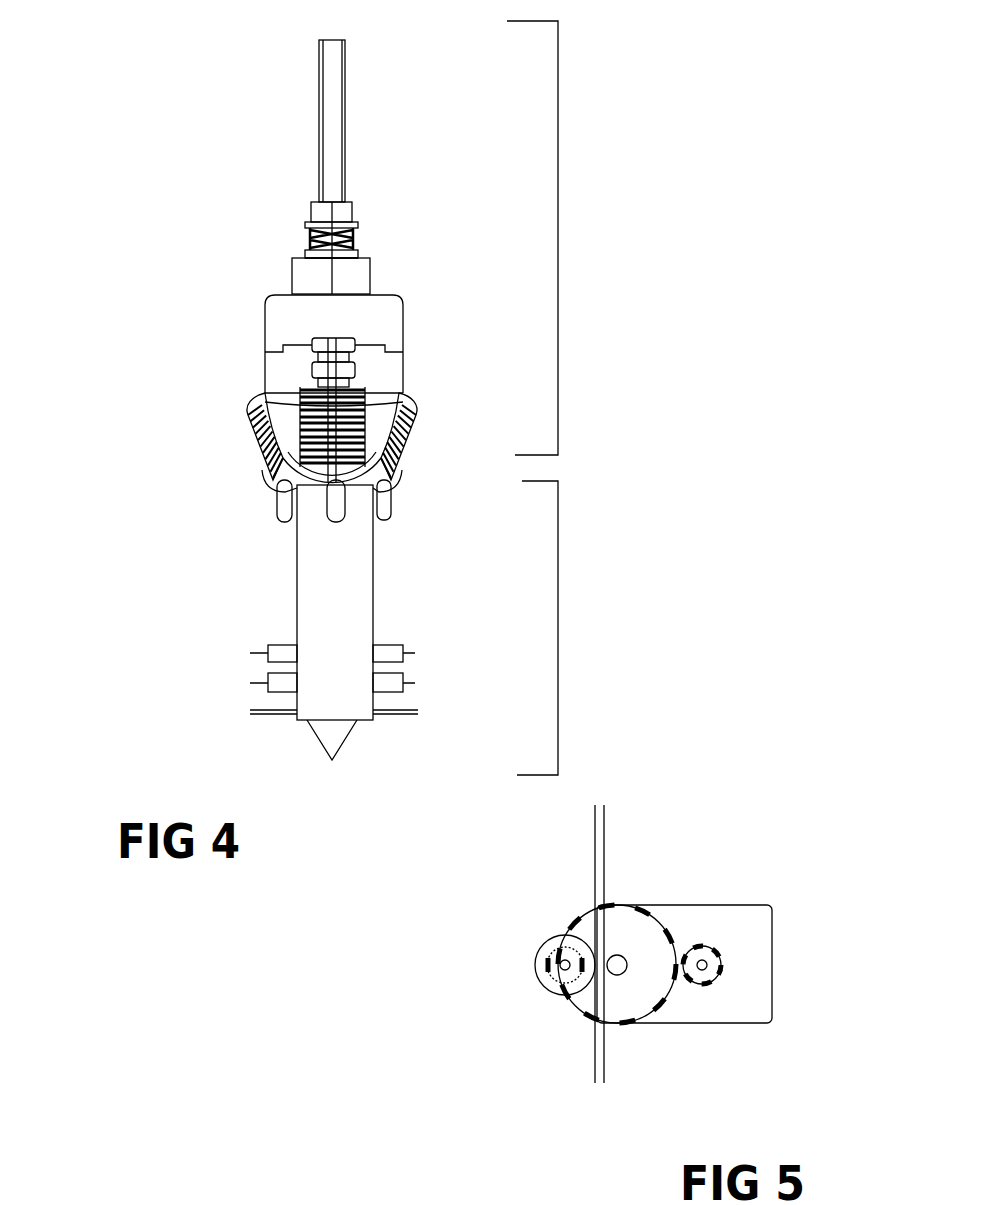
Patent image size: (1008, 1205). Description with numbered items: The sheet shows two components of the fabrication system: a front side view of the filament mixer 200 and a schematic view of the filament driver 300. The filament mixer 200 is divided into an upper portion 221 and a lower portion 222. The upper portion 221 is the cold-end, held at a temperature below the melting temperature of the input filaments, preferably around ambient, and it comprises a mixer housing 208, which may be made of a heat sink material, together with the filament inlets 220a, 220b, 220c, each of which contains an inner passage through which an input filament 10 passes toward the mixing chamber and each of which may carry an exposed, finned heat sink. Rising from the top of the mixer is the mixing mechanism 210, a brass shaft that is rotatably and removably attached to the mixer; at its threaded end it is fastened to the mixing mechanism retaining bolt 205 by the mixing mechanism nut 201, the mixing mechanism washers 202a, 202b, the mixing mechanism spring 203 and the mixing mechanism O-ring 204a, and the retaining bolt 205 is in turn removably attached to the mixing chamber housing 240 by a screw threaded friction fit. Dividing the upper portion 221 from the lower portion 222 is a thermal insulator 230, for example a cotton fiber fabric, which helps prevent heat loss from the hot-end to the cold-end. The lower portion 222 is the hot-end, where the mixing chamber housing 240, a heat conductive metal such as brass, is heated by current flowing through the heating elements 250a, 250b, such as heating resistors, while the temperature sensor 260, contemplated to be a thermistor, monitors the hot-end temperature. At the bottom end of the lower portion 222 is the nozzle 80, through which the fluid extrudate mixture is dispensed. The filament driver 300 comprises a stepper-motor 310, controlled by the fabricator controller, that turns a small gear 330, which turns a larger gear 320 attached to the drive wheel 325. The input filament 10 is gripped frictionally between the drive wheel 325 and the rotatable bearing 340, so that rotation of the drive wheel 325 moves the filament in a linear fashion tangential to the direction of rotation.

In FIG. 4, the filament mixer 200 is at (157, 248).
In FIG. 4, the mixing mechanism 210 is at (332, 133).
In FIG. 4, the mixing mechanism nut 201 is at (345, 207).
In FIG. 4, the mixing mechanism washer 202a is at (352, 224).
In FIG. 4, the mixing mechanism spring 203 is at (315, 240).
In FIG. 4, the mixing mechanism washer 202b is at (310, 255).
In FIG. 4, the mixing mechanism O-ring 204a is at (368, 257).
In FIG. 4, the mixing mechanism retaining bolt 205 is at (310, 290).
In FIG. 4, the mixer housing 208 is at (280, 375).
In FIG. 4, the thermal insulator 230 is at (270, 490).
In FIG. 4, the filament inlet 220c is at (283, 503).
In FIG. 4, the filament inlet 220a is at (335, 510).
In FIG. 4, the filament inlet 220b is at (385, 503).
In FIG. 4, the mixing chamber housing 240 is at (345, 590).
In FIG. 4, the heating element 250b is at (278, 650).
In FIG. 4, the heating element 250a is at (393, 685).
In FIG. 4, the temperature sensor 260 is at (290, 712).
In FIG. 4, the nozzle 80 is at (345, 735).
In FIG. 4, the upper portion 221 is at (560, 236).
In FIG. 4, the lower portion 222 is at (559, 582).
In FIG. 5, the filament driver 300 is at (798, 892).
In FIG. 5, the input filament 10 is at (600, 860).
In FIG. 5, the stepper-motor 310 is at (748, 920).
In FIG. 5, the larger gear 320 is at (578, 915).
In FIG. 5, the drive wheel 325 is at (622, 975).
In FIG. 5, the rotatable bearing 340 is at (537, 950).
In FIG. 5, the small gear 330 is at (710, 982).